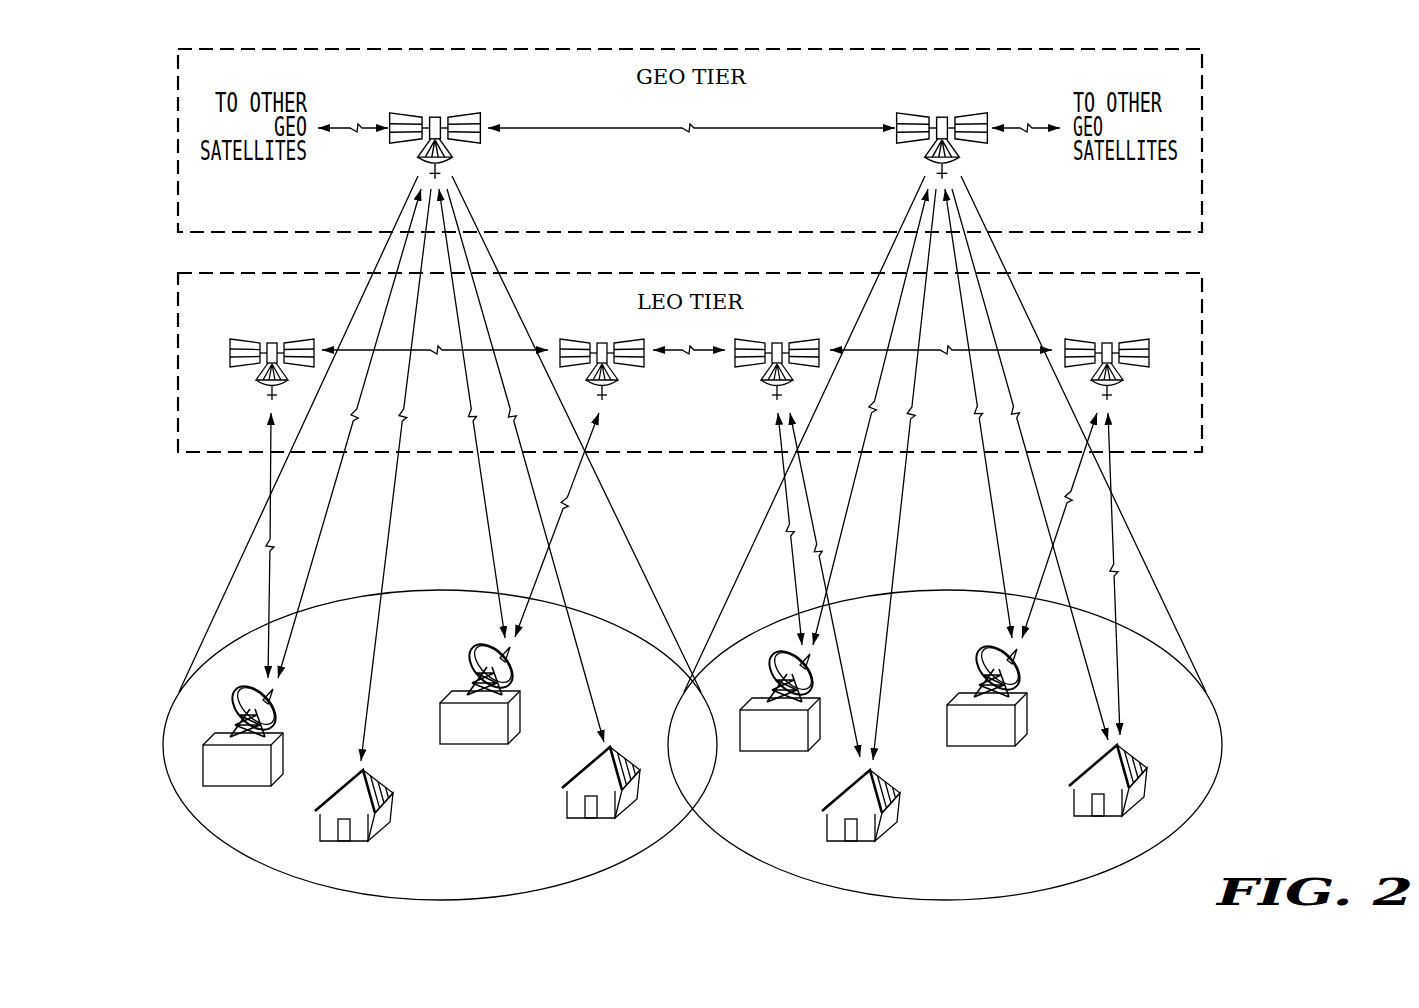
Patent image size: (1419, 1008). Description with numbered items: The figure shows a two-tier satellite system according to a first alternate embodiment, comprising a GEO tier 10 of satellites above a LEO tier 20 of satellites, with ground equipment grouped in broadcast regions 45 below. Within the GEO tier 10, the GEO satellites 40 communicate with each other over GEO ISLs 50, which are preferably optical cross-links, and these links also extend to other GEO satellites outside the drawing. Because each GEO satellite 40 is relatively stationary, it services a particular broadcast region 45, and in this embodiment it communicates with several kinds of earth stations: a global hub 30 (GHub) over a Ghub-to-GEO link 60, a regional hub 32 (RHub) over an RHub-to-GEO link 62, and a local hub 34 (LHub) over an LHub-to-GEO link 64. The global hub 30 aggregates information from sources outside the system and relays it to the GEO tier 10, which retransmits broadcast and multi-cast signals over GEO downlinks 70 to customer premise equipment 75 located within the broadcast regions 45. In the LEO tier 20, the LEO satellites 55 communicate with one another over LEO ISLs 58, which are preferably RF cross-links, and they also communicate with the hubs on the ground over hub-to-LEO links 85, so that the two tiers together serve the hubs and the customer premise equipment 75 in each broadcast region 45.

The GEO tier 10 is at (1203, 210).
The LEO tier 20 is at (1203, 432).
The global hub 30 is at (240, 787).
The regional hub 32 is at (776, 754).
The local hub 34 is at (984, 747).
The GEO satellite 40 is at (434, 112).
The broadcast region 45 is at (488, 860).
The GEO ISL 50 is at (352, 127).
The LEO satellite 55 is at (272, 337).
The LEO ISL 58 is at (689, 355).
The Ghub-to-GEO link 60 is at (321, 546).
The RHub-to-GEO link 62 is at (840, 543).
The LHub-to-GEO link 64 is at (995, 534).
The GEO downlink 70 is at (378, 634).
The customer premise equipment 75 is at (360, 843).
The hub-to-LEO link 85 is at (274, 512).